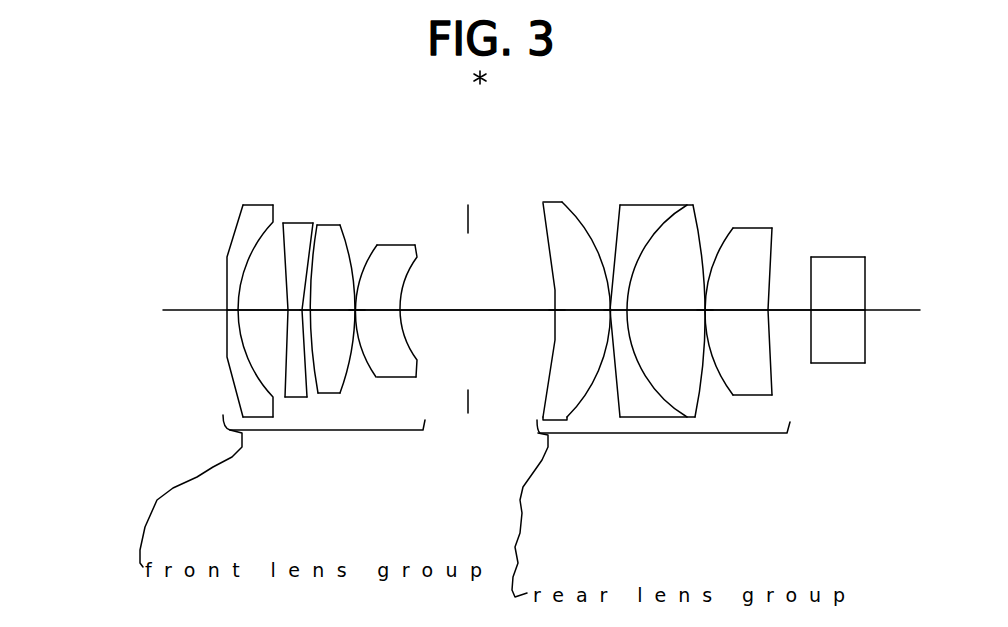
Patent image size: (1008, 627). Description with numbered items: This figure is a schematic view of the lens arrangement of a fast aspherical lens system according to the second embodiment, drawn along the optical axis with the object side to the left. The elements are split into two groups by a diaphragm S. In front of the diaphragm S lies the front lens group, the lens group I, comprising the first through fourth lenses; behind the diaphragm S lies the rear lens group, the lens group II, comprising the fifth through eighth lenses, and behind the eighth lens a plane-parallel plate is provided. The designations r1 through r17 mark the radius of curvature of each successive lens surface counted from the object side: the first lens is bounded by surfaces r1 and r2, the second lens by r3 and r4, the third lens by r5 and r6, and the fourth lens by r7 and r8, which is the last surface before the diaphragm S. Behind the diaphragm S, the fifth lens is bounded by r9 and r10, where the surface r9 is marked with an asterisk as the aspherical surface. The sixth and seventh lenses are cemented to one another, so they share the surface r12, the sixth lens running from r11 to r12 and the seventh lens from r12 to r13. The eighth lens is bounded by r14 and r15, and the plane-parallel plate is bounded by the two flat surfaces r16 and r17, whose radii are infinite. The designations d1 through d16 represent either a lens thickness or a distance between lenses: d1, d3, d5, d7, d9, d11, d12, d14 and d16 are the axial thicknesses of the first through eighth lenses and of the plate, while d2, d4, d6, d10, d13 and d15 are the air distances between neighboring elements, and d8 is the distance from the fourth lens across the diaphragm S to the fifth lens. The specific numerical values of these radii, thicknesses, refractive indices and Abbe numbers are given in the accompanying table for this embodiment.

The radius of curvature of first lens surface r1 is at (243, 205).
The radius of curvature of second lens surface r2 is at (273, 205).
The radius of curvature of third lens surface r3 is at (283, 223).
The radius of curvature of fourth lens surface r4 is at (313, 223).
The radius of curvature of fifth lens surface r5 is at (317, 225).
The radius of curvature of sixth lens surface r6 is at (340, 225).
The radius of curvature of seventh lens surface r7 is at (377, 245).
The radius of curvature of eighth lens surface r8 is at (417, 252).
The radius of curvature of ninth lens surface r9 is at (543, 203).
The radius of curvature of tenth lens surface r10 is at (562, 202).
The radius of curvature of eleventh lens surface r11 is at (620, 205).
The radius of curvature of twelfth lens surface r12 is at (688, 205).
The radius of curvature of thirteenth lens surface r13 is at (693, 210).
The radius of curvature of fourteenth lens surface r14 is at (735, 228).
The radius of curvature of fifteenth lens surface r15 is at (772, 228).
The radius of curvature of sixteenth lens surface r16 is at (811, 257).
The radius of curvature of seventeenth lens surface r17 is at (865, 257).
The lens thickness d1 is at (232, 310).
The distance between lenses d2 is at (263, 310).
The lens thickness d3 is at (293, 310).
The distance between lenses d4 is at (306, 310).
The lens thickness d5 is at (333, 310).
The distance between lenses d6 is at (357, 310).
The lens thickness d7 is at (383, 310).
The distance between lenses d8 is at (477, 310).
The lens thickness d9 is at (557, 310).
The distance between lenses d10 is at (582, 310).
The lens thickness d11 is at (612, 310).
The lens thickness d12 is at (660, 310).
The distance between lenses d13 is at (705, 310).
The lens thickness d14 is at (737, 310).
The distance between lenses d15 is at (788, 310).
The lens thickness d16 is at (835, 310).
The diaphragm S is at (468, 220).